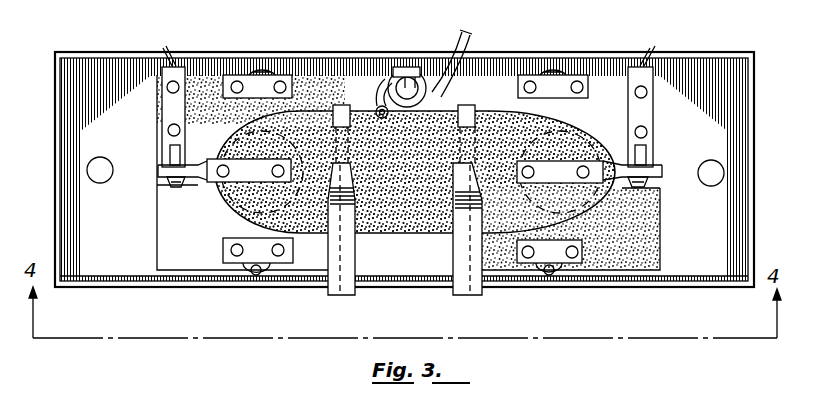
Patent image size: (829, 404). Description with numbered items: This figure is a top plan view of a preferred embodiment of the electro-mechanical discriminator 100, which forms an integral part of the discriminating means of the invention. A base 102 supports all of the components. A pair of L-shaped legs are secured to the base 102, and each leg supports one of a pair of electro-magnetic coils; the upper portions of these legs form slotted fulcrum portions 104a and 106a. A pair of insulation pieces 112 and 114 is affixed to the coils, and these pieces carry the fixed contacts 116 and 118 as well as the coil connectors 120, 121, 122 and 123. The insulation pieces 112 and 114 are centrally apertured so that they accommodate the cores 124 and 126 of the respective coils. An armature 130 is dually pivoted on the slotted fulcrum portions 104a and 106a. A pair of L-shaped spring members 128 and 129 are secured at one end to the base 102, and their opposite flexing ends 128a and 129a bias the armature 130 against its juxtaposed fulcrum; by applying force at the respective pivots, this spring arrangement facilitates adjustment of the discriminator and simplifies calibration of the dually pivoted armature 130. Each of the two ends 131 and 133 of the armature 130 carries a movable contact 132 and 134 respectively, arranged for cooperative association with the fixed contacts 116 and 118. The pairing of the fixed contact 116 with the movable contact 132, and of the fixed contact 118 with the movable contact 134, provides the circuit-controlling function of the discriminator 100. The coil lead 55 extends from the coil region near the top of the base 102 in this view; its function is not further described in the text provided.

The coil and lead tube assembly 55 is at (462, 34).
The electro-mechanical discriminator 100 is at (665, 289).
The base 102 is at (725, 253).
The upper slotted fulcrum portion 104a is at (353, 149).
The upper slotted fulcrum portion 106a is at (457, 136).
The insulation piece 112 is at (163, 227).
The insulation piece 114 is at (661, 217).
The fixed contact 116 is at (162, 160).
The fixed contact 118 is at (660, 158).
The coil connector 120 is at (259, 278).
The coil connector 121 is at (257, 70).
The coil connector 122 is at (553, 68).
The coil connector 123 is at (565, 277).
The core 124 is at (228, 216).
The core 126 is at (597, 124).
The L-shaped spring member 128 is at (353, 293).
The flexing end 128a is at (357, 187).
The L-shaped spring member 129 is at (470, 293).
The flexing end 129a is at (466, 191).
The armature 130 is at (380, 232).
The armature end 131 is at (223, 143).
The movable contact 132 is at (156, 177).
The armature end 133 is at (596, 201).
The movable contact 134 is at (657, 168).